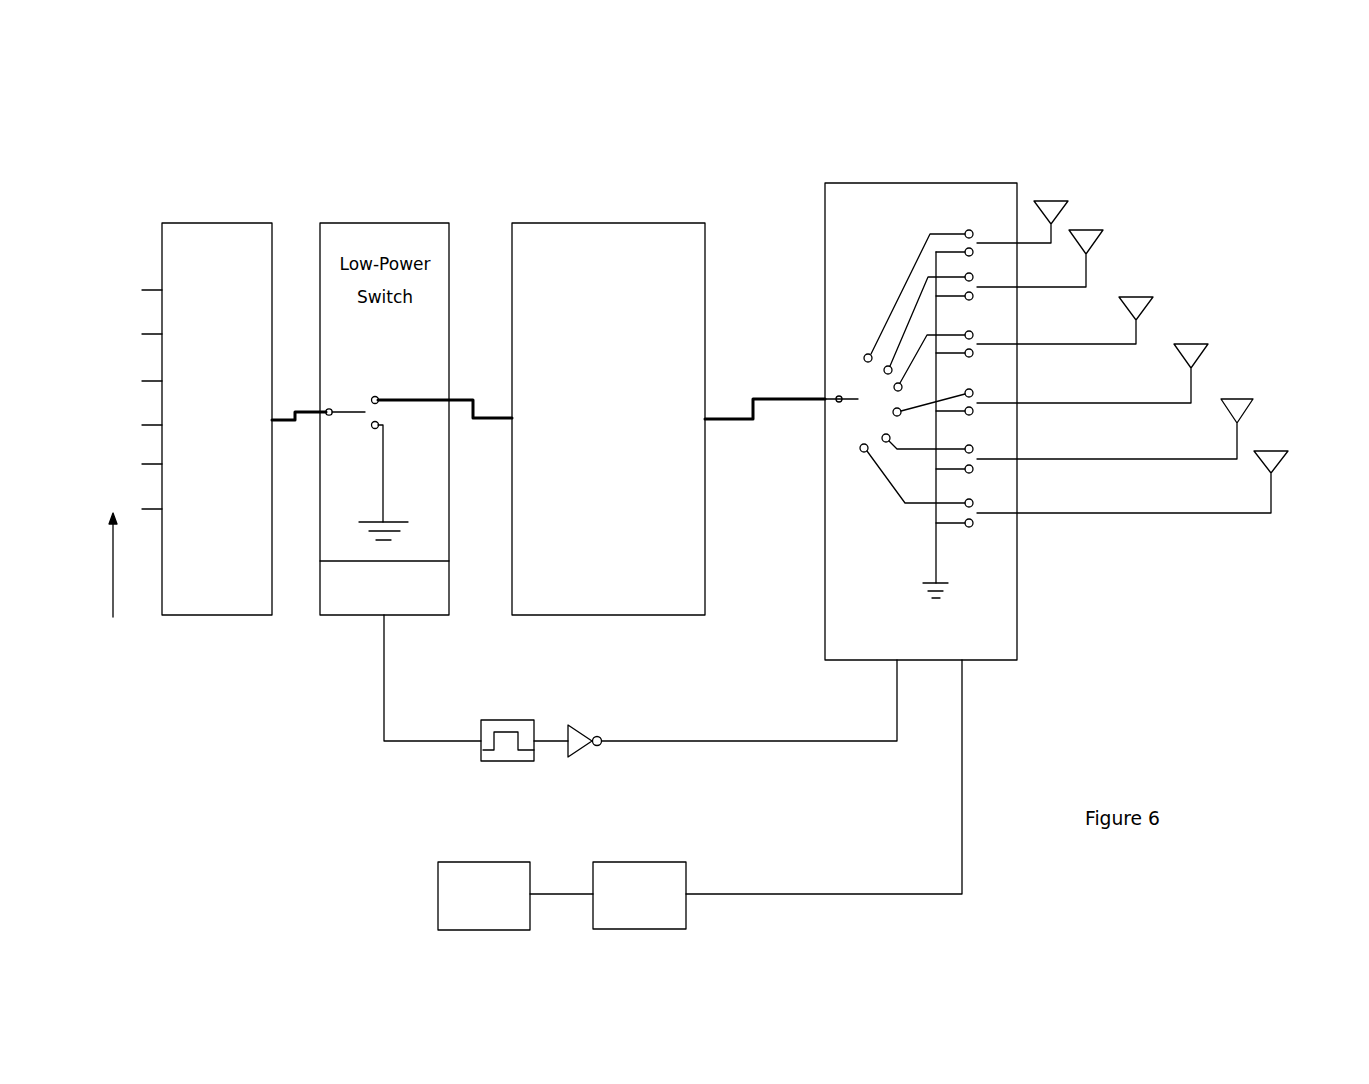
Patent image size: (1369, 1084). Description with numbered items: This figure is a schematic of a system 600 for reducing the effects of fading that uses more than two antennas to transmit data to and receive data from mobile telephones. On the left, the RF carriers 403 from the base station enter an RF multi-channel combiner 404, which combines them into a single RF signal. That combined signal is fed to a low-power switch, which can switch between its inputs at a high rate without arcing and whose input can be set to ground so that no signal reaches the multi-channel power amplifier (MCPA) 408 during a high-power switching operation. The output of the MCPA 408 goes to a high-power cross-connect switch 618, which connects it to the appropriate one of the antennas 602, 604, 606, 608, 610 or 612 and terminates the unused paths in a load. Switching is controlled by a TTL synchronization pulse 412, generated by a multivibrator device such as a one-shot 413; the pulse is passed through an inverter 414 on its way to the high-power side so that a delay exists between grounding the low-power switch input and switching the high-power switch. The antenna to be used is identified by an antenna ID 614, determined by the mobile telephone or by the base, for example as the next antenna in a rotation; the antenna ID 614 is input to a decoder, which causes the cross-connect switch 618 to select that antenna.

The RF carriers 403 is at (117, 579).
The RF multi-channel combiner 404 is at (207, 419).
The multi-channel power amplifier (MCPA) 408 is at (608, 419).
The TTL synchronization pulse 412 is at (487, 762).
The one-shot 413 is at (514, 720).
The inverter 414 is at (567, 748).
The system 600 is at (314, 717).
The antenna 602 is at (1055, 201).
The antenna 604 is at (1087, 230).
The antenna 606 is at (1143, 297).
The antenna 608 is at (1192, 344).
The antenna 610 is at (1240, 399).
The antenna 612 is at (1274, 451).
The antenna ID 614 is at (438, 892).
The high-power cross-connect switch 618 is at (927, 183).